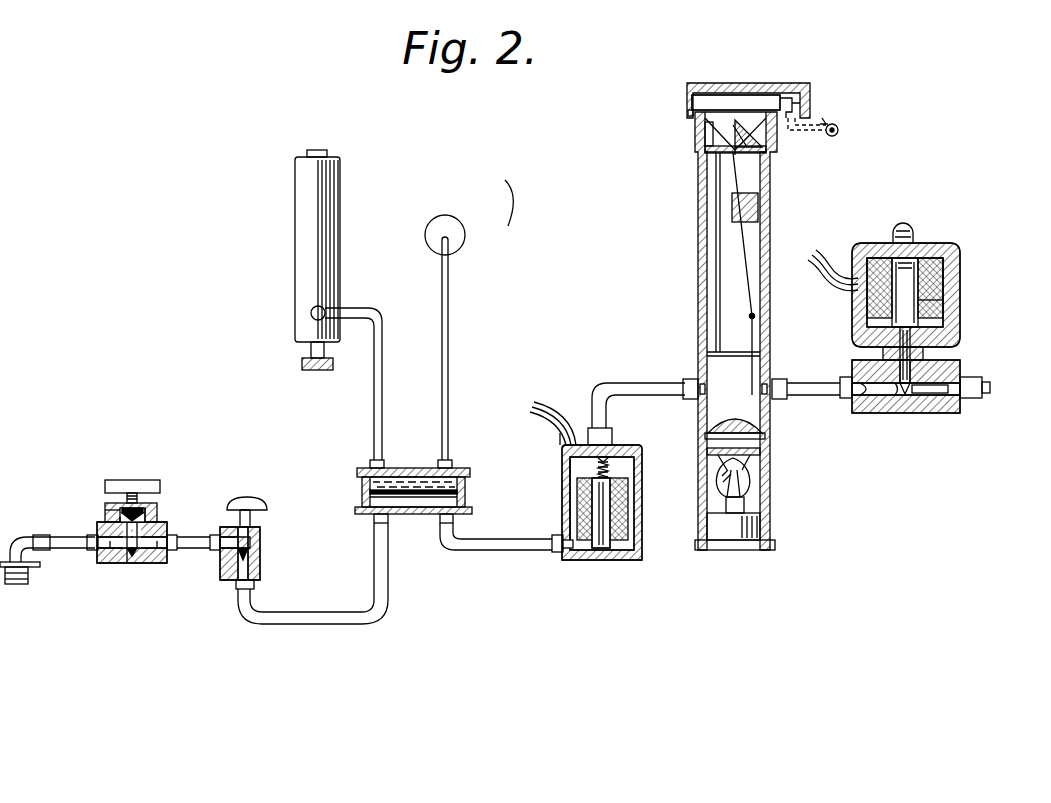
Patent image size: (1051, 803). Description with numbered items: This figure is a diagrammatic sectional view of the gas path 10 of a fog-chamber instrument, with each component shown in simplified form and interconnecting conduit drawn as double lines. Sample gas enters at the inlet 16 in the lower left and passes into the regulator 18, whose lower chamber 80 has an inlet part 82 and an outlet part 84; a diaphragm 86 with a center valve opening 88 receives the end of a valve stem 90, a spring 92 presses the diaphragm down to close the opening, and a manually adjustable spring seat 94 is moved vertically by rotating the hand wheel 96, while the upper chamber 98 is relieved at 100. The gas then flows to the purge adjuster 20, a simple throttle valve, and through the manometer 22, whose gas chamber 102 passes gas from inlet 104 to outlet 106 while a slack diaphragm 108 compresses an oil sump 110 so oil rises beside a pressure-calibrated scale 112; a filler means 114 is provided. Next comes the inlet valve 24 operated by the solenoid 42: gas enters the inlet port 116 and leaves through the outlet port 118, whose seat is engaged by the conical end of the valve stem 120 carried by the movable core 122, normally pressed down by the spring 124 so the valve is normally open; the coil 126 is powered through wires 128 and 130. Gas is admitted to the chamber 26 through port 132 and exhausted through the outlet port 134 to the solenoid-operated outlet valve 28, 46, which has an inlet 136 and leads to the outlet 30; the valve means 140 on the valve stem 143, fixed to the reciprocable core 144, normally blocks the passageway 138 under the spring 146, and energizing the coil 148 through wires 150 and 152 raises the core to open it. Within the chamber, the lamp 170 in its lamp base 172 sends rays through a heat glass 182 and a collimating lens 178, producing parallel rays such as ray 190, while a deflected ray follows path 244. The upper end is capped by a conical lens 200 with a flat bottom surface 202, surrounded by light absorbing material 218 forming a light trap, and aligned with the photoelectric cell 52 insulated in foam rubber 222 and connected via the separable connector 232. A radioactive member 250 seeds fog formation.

The gas path 10 is at (508, 226).
The inlet 16 is at (24, 538).
The regulator 18 is at (142, 565).
The purge adjuster 20 is at (262, 544).
The manometer 22 is at (352, 472).
The inlet valve 24 is at (636, 562).
The chamber 26 is at (695, 311).
The outlet valve 28 is at (963, 337).
The outlet 30 is at (975, 380).
The solenoid 42 is at (566, 492).
The solenoid 46 is at (948, 286).
The photoelectric cell 52 is at (765, 105).
The lower chamber 80 is at (165, 530).
The inlet part 82 is at (108, 552).
The outlet part 84 is at (162, 552).
The diaphragm 86 is at (156, 520).
The center valve opening 88 is at (107, 512).
The valve stem 90 is at (122, 555).
The spring 92 is at (143, 510).
The spring seat 94 is at (122, 504).
The hand wheel 96 is at (147, 486).
The upper chamber 98 is at (150, 516).
The relief 100 is at (107, 519).
The gas chamber 102 is at (415, 508).
The inlet 104 is at (377, 516).
The outlet 106 is at (470, 512).
The slack diaphragm 108 is at (460, 492).
The oil sump 110 is at (408, 480).
The scale 112 is at (305, 253).
The filler means 114 is at (450, 335).
The inlet port 116 is at (567, 555).
The outlet port 118 is at (604, 452).
The valve stem 120 is at (614, 470).
The movable core 122 is at (606, 516).
The spring 124 is at (612, 460).
The coil 126 is at (628, 493).
The wire 128 is at (556, 415).
The wire 130 is at (555, 422).
The port 132 is at (700, 380).
The outlet port 134 is at (768, 380).
The inlet 136 is at (870, 412).
The passageway 138 is at (930, 398).
The valve means 140 is at (895, 400).
The valve stem 143 is at (882, 362).
The reciprocable core 144 is at (940, 272).
The spring 146 is at (912, 262).
The coil 148 is at (945, 305).
The wire 150 is at (833, 258).
The wire 152 is at (838, 275).
The lamp 170 is at (750, 484).
The lamp base 172 is at (746, 507).
The collimating lens 178 is at (737, 416).
The heat glass 182 is at (754, 460).
The ray 190 is at (716, 259).
The conical lens 200 is at (712, 128).
The flat bottom surface 202 is at (712, 160).
The light absorbing material 218 is at (777, 130).
The foam rubber 222 is at (735, 83).
The separable connector 232 is at (839, 131).
The path 244 is at (742, 238).
The member 250 is at (760, 206).